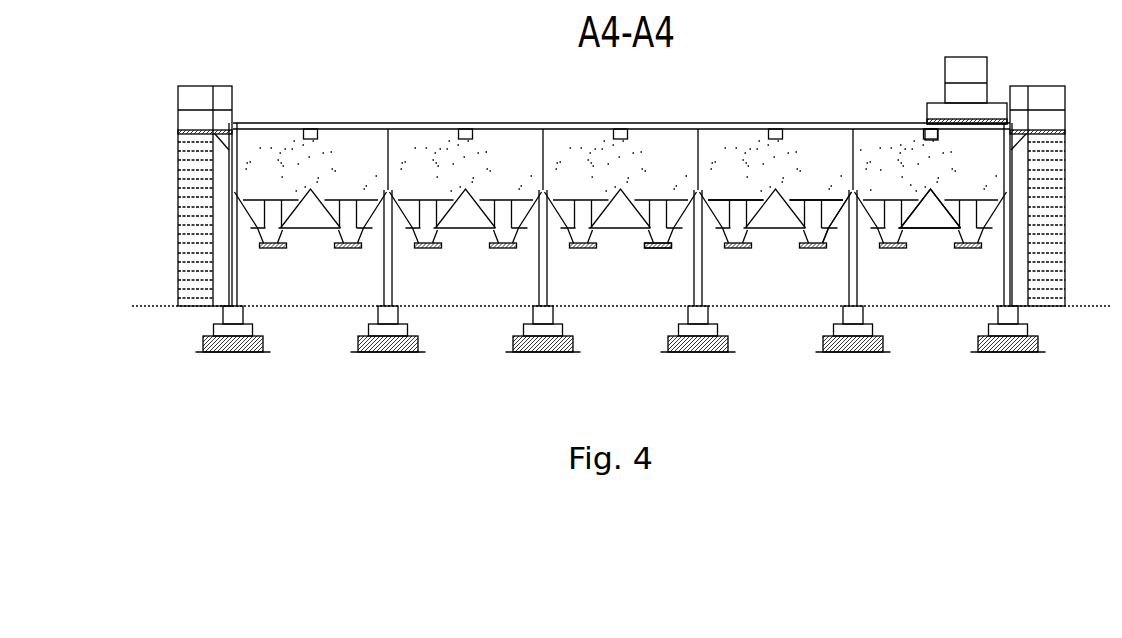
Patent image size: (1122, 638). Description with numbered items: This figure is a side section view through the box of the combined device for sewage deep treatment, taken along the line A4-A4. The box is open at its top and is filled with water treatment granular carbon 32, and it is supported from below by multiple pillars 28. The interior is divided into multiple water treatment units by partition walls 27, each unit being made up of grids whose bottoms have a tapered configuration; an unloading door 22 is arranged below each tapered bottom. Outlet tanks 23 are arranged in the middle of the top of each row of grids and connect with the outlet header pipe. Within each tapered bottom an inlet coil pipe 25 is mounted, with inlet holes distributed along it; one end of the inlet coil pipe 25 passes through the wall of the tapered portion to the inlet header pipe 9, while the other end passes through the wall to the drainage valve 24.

The inlet header pipe 9 is at (930, 232).
The unloading door 22 is at (662, 244).
The outlet tank 23 is at (773, 125).
The drainage valve 24 is at (836, 226).
The inlet coil pipe 25 is at (743, 198).
The partition wall 27 is at (698, 145).
The pillar 28 is at (700, 250).
The water treatment granular carbon 32 is at (892, 160).